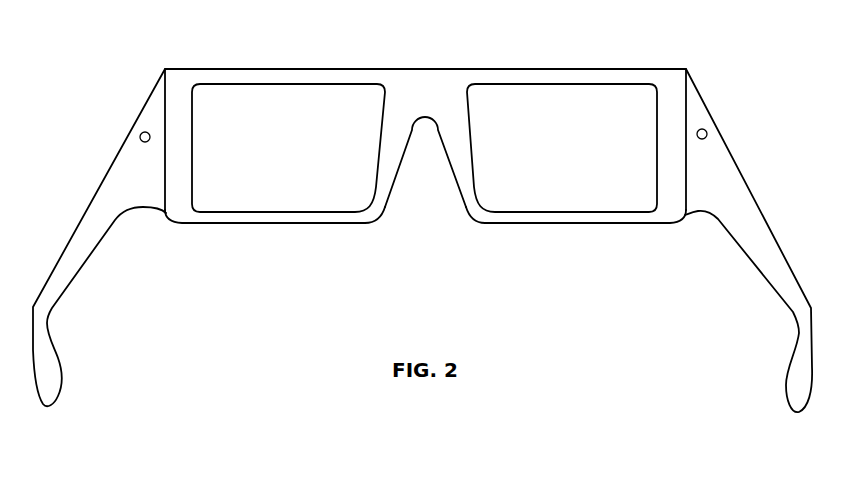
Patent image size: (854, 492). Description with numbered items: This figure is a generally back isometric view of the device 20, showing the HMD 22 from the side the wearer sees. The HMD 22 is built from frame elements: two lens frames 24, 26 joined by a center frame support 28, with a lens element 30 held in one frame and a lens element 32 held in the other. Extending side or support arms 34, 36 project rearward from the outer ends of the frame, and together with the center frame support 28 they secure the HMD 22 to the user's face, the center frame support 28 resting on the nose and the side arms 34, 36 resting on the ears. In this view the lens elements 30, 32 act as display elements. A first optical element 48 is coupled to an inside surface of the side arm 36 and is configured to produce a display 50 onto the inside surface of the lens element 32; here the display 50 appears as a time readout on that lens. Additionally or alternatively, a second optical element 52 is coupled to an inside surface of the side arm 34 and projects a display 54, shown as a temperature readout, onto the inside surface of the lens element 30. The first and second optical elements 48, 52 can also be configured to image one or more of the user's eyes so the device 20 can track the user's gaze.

The device 20 is at (652, 326).
The HMD 22 is at (213, 52).
The lens frame 24 is at (587, 223).
The lens frame 26 is at (215, 223).
The center frame support 28 is at (422, 68).
The lens element 30 is at (527, 202).
The lens element 32 is at (303, 202).
The side arm 34 is at (737, 172).
The side arm 36 is at (88, 207).
The first optical element 48 is at (140, 135).
The display 50 is at (215, 120).
The second optical element 52 is at (704, 128).
The display 54 is at (617, 121).